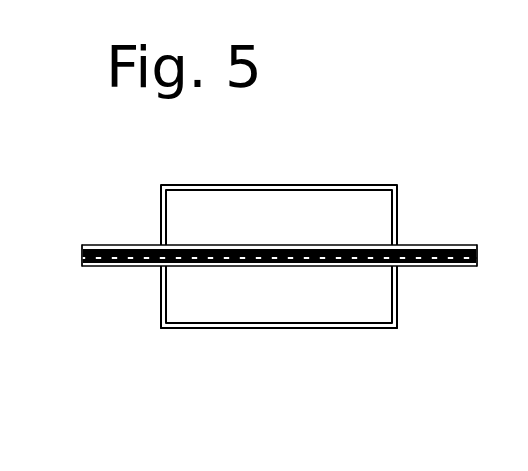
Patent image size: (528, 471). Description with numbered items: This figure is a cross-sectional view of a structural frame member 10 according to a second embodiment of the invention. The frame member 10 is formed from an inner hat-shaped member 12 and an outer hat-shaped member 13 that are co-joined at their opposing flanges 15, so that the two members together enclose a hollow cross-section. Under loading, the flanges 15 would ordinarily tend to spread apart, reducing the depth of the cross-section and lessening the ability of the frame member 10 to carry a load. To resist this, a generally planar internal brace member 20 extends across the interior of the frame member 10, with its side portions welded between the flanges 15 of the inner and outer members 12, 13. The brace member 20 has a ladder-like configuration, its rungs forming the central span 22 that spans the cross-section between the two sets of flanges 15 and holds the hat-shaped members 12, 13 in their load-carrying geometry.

The structural frame member 10 is at (279, 250).
The inner hat-shaped member 12 is at (320, 185).
The outer hat-shaped member 13 is at (267, 329).
The flanges 15 is at (112, 266).
The internal brace member 20 is at (279, 262).
The central span 22 is at (281, 248).